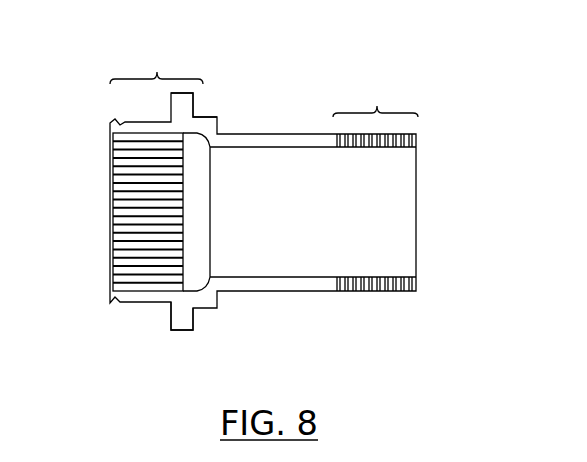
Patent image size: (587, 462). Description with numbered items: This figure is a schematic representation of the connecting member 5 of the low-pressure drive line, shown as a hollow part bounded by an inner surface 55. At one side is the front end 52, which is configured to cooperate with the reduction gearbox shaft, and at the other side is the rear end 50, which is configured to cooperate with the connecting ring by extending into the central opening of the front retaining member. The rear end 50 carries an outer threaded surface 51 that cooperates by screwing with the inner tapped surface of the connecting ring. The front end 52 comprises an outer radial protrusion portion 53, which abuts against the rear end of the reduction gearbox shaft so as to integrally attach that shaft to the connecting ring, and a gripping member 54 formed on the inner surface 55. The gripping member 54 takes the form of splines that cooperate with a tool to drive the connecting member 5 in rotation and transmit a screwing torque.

The connecting member 5 is at (96, 159).
The rear end 50 is at (375, 111).
The outer threaded surface 51 is at (388, 292).
The front end 52 is at (163, 79).
The outer radial protrusion portion 53 is at (181, 331).
The gripping member 54 is at (140, 293).
The inner surface 55 is at (388, 275).